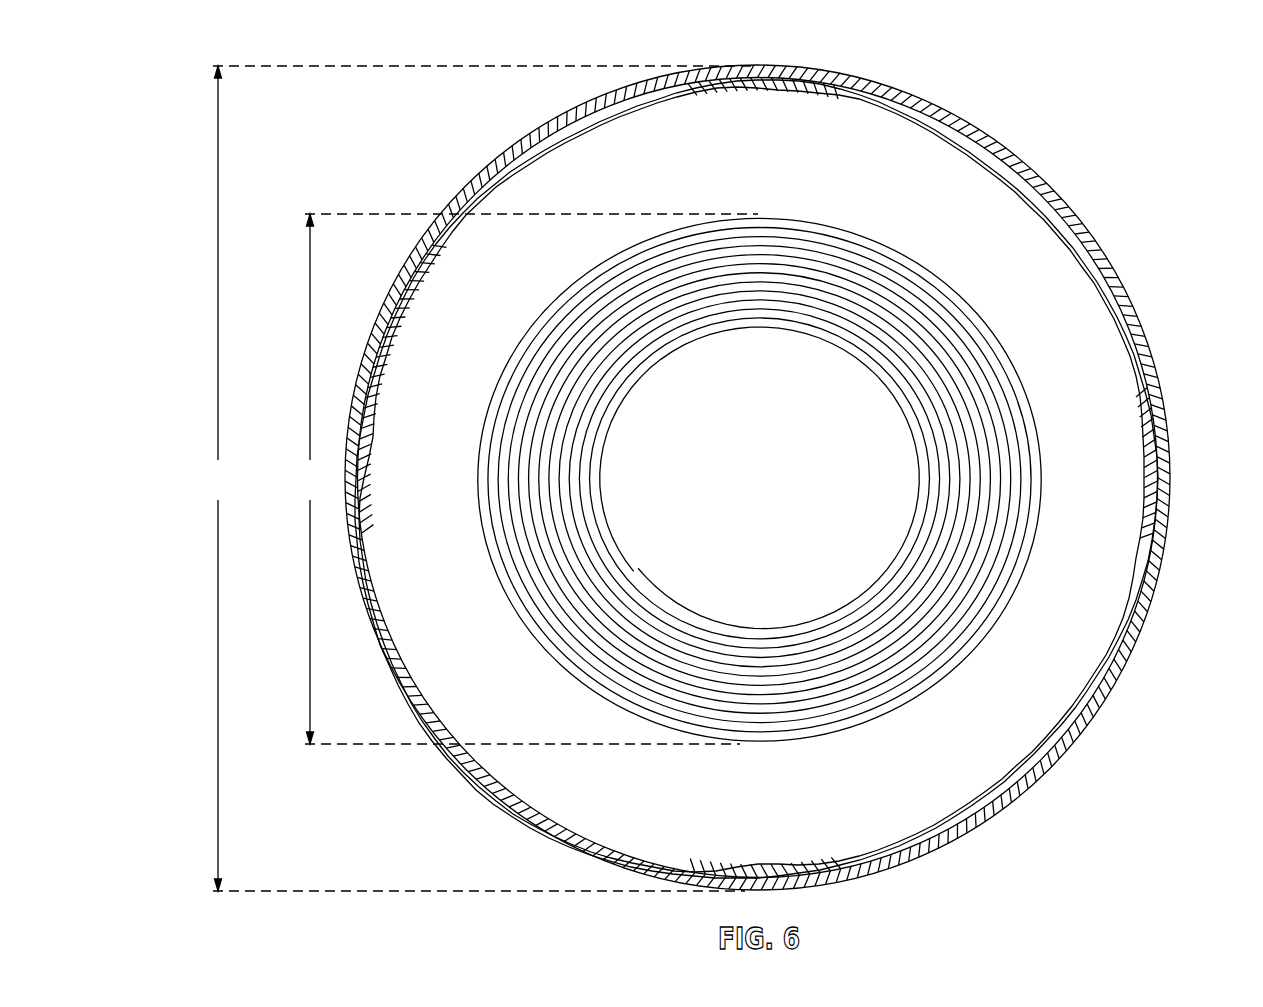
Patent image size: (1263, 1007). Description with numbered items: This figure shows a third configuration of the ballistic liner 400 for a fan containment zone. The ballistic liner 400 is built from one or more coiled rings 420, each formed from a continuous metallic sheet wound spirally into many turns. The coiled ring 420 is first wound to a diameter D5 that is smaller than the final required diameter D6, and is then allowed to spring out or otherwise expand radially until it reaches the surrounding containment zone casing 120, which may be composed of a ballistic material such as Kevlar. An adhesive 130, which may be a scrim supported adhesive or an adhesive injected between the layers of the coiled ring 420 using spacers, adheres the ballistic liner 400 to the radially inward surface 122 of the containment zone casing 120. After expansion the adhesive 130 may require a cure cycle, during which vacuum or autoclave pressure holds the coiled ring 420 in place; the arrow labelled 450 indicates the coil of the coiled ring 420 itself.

The ballistic liner 400 is at (1040, 64).
The coiled ring 420 is at (760, 217).
The coil 450 is at (838, 200).
The containment zone casing 120 is at (1113, 268).
The adhesive 130 is at (1147, 367).
The radially inward surface 122 is at (548, 792).
The diameter D5 is at (525, 479).
The final required diameter D6 is at (477, 478).